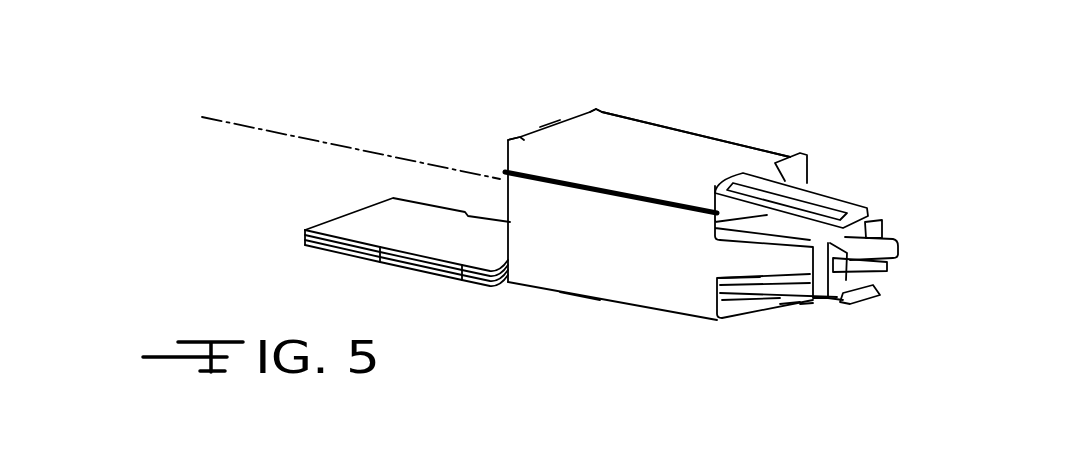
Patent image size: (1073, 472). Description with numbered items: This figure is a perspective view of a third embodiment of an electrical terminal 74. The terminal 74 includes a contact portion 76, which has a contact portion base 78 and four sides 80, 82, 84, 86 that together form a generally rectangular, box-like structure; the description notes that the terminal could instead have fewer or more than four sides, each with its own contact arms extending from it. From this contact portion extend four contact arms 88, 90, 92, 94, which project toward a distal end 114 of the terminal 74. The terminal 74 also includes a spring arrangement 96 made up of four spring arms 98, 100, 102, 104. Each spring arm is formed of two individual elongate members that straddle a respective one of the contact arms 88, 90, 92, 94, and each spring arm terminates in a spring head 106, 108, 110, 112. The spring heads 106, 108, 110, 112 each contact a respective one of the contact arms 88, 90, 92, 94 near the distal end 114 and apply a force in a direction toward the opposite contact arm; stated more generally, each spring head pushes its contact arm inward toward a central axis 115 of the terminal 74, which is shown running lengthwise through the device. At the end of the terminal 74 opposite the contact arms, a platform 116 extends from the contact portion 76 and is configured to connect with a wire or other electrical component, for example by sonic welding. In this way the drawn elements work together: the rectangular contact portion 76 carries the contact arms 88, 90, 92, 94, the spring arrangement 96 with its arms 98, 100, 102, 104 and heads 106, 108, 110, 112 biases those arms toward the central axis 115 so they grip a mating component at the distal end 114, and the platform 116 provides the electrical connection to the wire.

The electrical terminal 74 is at (770, 127).
The contact portion 76 is at (620, 110).
The contact portion base 78 is at (526, 126).
The side 80 is at (528, 270).
The side 82 is at (583, 297).
The side 84 is at (675, 125).
The side 86 is at (535, 124).
The contact arm 88 is at (713, 267).
The contact arm 90 is at (777, 302).
The contact arm 92 is at (899, 246).
The contact arm 94 is at (815, 172).
The spring arrangement 96 is at (792, 312).
The spring arm 98 is at (767, 279).
The spring arm 100 is at (806, 308).
The spring arm 102 is at (877, 228).
The spring arm 104 is at (822, 190).
The spring head 106 is at (807, 305).
The spring head 108 is at (850, 303).
The spring head 110 is at (889, 265).
The spring head 112 is at (873, 216).
The distal end 114 is at (910, 292).
The central axis 115 is at (233, 123).
The platform 116 is at (345, 217).